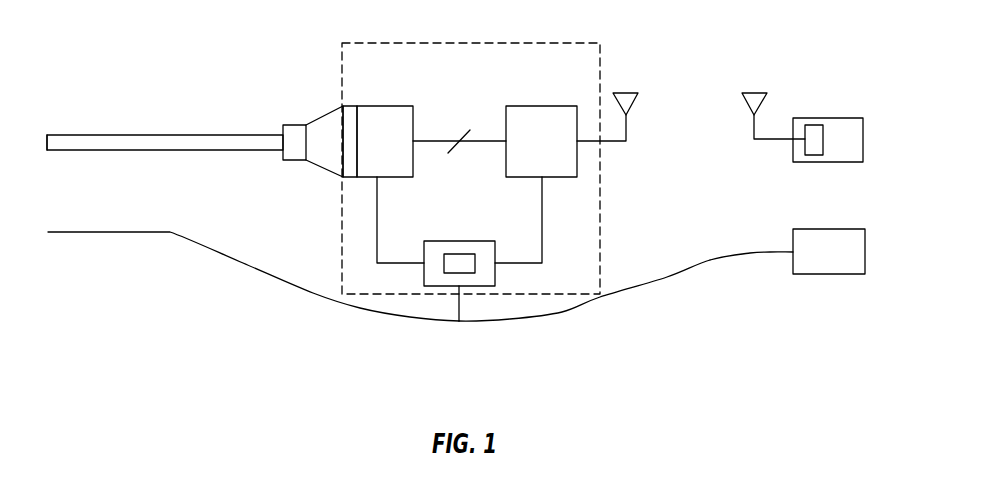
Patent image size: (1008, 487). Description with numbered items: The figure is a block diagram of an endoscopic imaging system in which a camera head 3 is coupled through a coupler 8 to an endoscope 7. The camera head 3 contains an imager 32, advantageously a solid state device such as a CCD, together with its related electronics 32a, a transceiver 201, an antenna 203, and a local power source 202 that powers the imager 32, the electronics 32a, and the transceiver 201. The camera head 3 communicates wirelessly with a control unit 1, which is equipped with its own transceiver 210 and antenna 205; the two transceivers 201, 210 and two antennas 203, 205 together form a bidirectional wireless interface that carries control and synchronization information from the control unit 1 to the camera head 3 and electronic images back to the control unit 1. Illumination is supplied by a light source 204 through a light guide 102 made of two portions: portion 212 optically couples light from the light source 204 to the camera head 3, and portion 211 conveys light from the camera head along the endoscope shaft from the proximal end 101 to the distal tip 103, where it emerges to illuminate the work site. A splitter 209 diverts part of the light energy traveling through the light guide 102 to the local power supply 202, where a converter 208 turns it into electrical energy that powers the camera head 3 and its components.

The control unit 1 is at (830, 155).
The camera head 3 is at (445, 168).
The endoscope 7 is at (165, 168).
The coupler 8 is at (310, 128).
The imager 32 is at (374, 123).
The related electronics 32a is at (402, 133).
The proximal end 101 is at (263, 167).
The light guide 102 is at (711, 237).
The distal end 103 is at (84, 168).
The transceiver 201 is at (560, 133).
The local power source 202 is at (478, 250).
The antenna 203 is at (656, 84).
The light source 204 is at (848, 271).
The antenna 205 is at (785, 84).
The converter 208 is at (429, 243).
The splitter 209 is at (496, 317).
The transceiver 210 is at (845, 117).
The portion 211 is at (253, 276).
The portion 212 is at (584, 304).